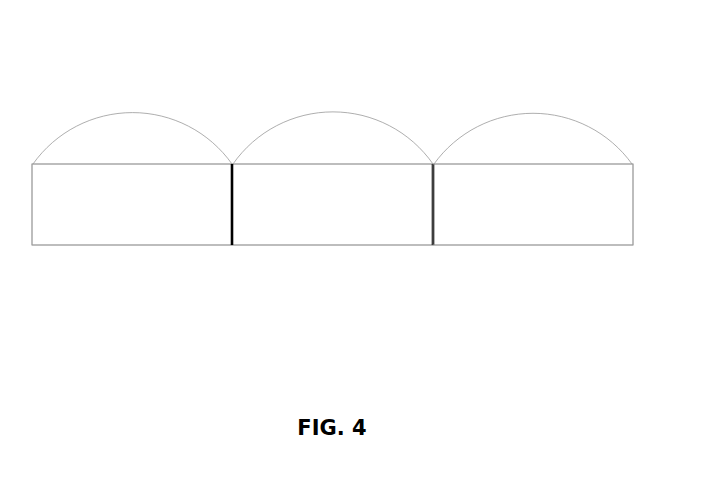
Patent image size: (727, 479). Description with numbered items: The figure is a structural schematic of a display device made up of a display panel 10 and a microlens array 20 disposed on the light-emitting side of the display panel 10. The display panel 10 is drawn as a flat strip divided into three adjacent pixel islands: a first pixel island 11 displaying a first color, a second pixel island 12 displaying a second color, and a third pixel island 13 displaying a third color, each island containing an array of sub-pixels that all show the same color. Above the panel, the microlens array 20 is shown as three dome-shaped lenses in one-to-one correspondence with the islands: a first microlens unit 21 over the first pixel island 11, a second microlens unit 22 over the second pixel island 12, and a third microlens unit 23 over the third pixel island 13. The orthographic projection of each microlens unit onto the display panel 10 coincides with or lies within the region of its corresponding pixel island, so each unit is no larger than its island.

The display panel 10 is at (128, 291).
The first pixel island 11 is at (132, 217).
The second pixel island 12 is at (335, 217).
The third pixel island 13 is at (535, 217).
The microlens array 20 is at (143, 52).
The first microlens unit 21 is at (143, 143).
The second microlens unit 22 is at (335, 145).
The third microlens unit 23 is at (535, 145).